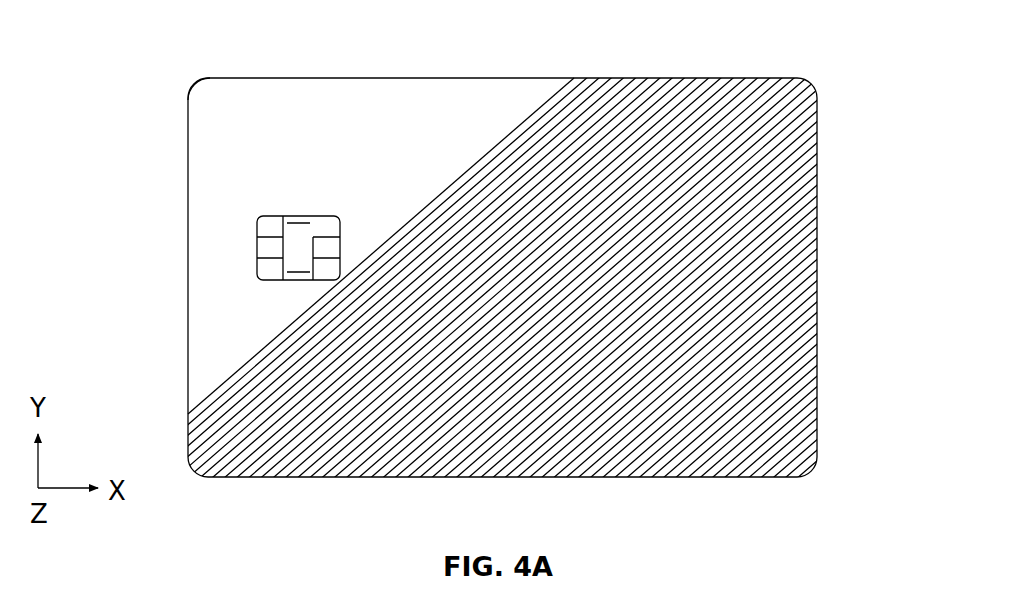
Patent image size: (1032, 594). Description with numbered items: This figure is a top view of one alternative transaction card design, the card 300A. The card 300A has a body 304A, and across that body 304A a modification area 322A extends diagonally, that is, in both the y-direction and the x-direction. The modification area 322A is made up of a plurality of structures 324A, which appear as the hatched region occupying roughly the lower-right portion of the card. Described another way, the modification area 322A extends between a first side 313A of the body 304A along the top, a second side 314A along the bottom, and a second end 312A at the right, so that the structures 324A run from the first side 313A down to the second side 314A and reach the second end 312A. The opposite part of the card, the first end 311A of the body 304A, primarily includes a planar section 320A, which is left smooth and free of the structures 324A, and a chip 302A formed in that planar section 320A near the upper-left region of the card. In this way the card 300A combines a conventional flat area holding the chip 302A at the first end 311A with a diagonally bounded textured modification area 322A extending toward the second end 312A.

The card 300A is at (152, 98).
The chip 302A is at (317, 216).
The body 304A is at (240, 76).
The first end 311A is at (186, 243).
The second end 312A is at (820, 275).
The first side 313A is at (484, 74).
The second side 314A is at (328, 480).
The planar section 320A is at (328, 106).
The modification area 322A is at (681, 448).
The structures 324A is at (680, 88).